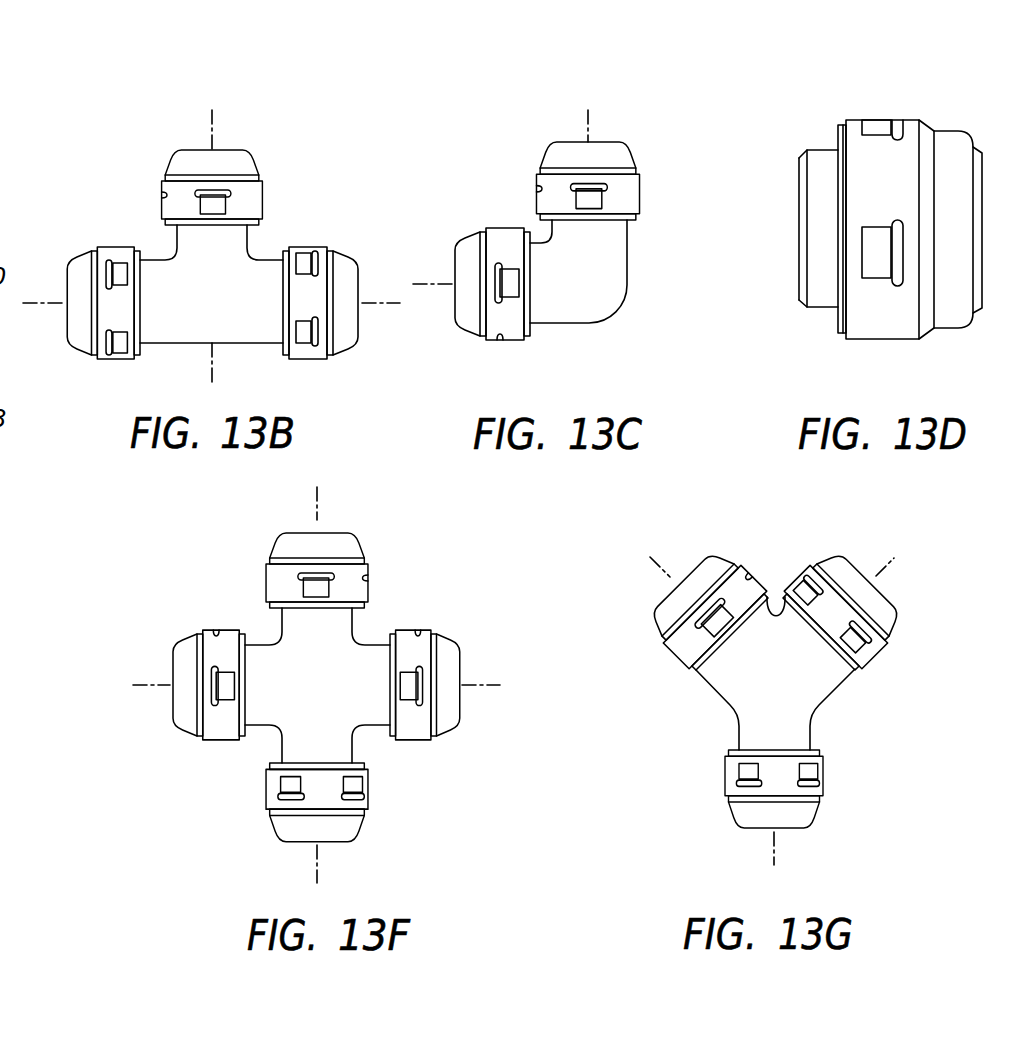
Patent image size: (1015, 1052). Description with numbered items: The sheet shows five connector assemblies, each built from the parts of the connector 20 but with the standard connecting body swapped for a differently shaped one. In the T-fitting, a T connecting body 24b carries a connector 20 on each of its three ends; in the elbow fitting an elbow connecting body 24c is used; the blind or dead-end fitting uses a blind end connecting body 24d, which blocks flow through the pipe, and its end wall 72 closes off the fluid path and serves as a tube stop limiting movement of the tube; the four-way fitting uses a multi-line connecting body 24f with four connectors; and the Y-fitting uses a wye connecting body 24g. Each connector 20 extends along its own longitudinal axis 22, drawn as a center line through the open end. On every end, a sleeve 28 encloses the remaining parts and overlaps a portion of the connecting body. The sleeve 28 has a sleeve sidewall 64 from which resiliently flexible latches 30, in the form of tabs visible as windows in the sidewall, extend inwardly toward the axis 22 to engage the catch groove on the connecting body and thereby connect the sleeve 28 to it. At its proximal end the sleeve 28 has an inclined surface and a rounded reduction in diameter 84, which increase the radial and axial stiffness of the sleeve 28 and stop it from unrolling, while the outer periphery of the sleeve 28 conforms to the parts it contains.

In FIG. 13B, the connector 20 is at (208, 250).
In FIG. 13C, the connector 20 is at (559, 239).
In FIG. 13D, the connector 20 is at (853, 216).
In FIG. 13F, the connector 20 is at (343, 713).
In FIG. 13G, the connector 20 is at (733, 674).
In FIG. 13B, the longitudinal axis 22 is at (213, 118).
In FIG. 13C, the longitudinal axis 22 is at (588, 110).
In FIG. 13F, the longitudinal axis 22 is at (317, 520).
In FIG. 13G, the longitudinal axis 22 is at (893, 558).
In FIG. 13B, the T connecting body 24b is at (177, 343).
In FIG. 13C, the elbow connecting body 24c is at (584, 323).
In FIG. 13D, the blind end connecting body 24d is at (835, 183).
In FIG. 13F, the multi-line connecting body 24f is at (339, 702).
In FIG. 13G, the wye connecting body 24g is at (794, 689).
In FIG. 13B, the sleeve 28 is at (162, 190).
In FIG. 13C, the sleeve 28 is at (638, 148).
In FIG. 13D, the sleeve 28 is at (872, 318).
In FIG. 13F, the sleeve 28 is at (465, 697).
In FIG. 13G, the sleeve 28 is at (652, 637).
In FIG. 13B, the latch 30 is at (220, 207).
In FIG. 13C, the latch 30 is at (600, 200).
In FIG. 13D, the latch 30 is at (875, 255).
In FIG. 13F, the latch 30 is at (405, 703).
In FIG. 13G, the latch 30 is at (718, 624).
In FIG. 13B, the sleeve sidewall 64 is at (175, 205).
In FIG. 13F, the sleeve sidewall 64 is at (402, 657).
In FIG. 13G, the sleeve sidewall 64 is at (748, 590).
In FIG. 13D, the end wall 72 is at (800, 250).
In FIG. 13B, the rounded reduction in diameter 84 is at (170, 165).